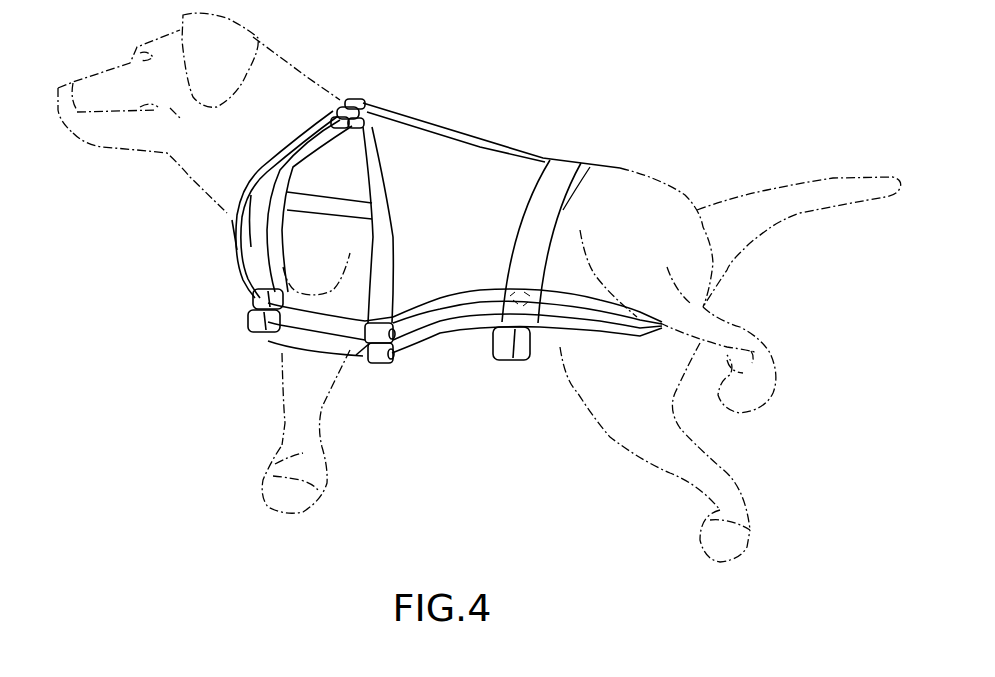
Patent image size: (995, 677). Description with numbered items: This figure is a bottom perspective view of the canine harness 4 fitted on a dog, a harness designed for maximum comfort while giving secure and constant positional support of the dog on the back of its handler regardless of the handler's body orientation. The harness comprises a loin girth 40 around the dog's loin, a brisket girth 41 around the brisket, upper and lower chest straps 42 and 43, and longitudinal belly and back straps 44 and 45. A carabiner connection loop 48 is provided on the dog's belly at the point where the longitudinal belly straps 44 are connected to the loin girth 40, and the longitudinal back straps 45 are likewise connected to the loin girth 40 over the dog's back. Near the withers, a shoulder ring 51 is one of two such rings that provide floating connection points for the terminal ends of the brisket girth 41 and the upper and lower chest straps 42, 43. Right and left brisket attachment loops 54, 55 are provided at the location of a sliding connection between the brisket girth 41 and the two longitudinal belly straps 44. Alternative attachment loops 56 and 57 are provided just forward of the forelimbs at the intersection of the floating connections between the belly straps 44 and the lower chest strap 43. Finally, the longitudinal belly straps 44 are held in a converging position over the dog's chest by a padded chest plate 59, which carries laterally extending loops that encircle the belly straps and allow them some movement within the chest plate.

The canine harness 4 is at (401, 98).
The loin girth 40 is at (543, 213).
The brisket girth 41 is at (373, 193).
The upper chest strap 42 is at (262, 174).
The lower chest strap 43 is at (273, 243).
The longitudinal belly straps 44 is at (468, 303).
The longitudinal back straps 45 is at (487, 146).
The carabiner connection loop 48 is at (510, 362).
The shoulder ring 51 is at (347, 95).
The brisket attachment loop 54 is at (363, 355).
The brisket attachment loop 55 is at (380, 365).
The alternative attachment loop 56 is at (253, 297).
The alternative attachment loop 57 is at (250, 313).
The padded chest plate 59 is at (228, 232).